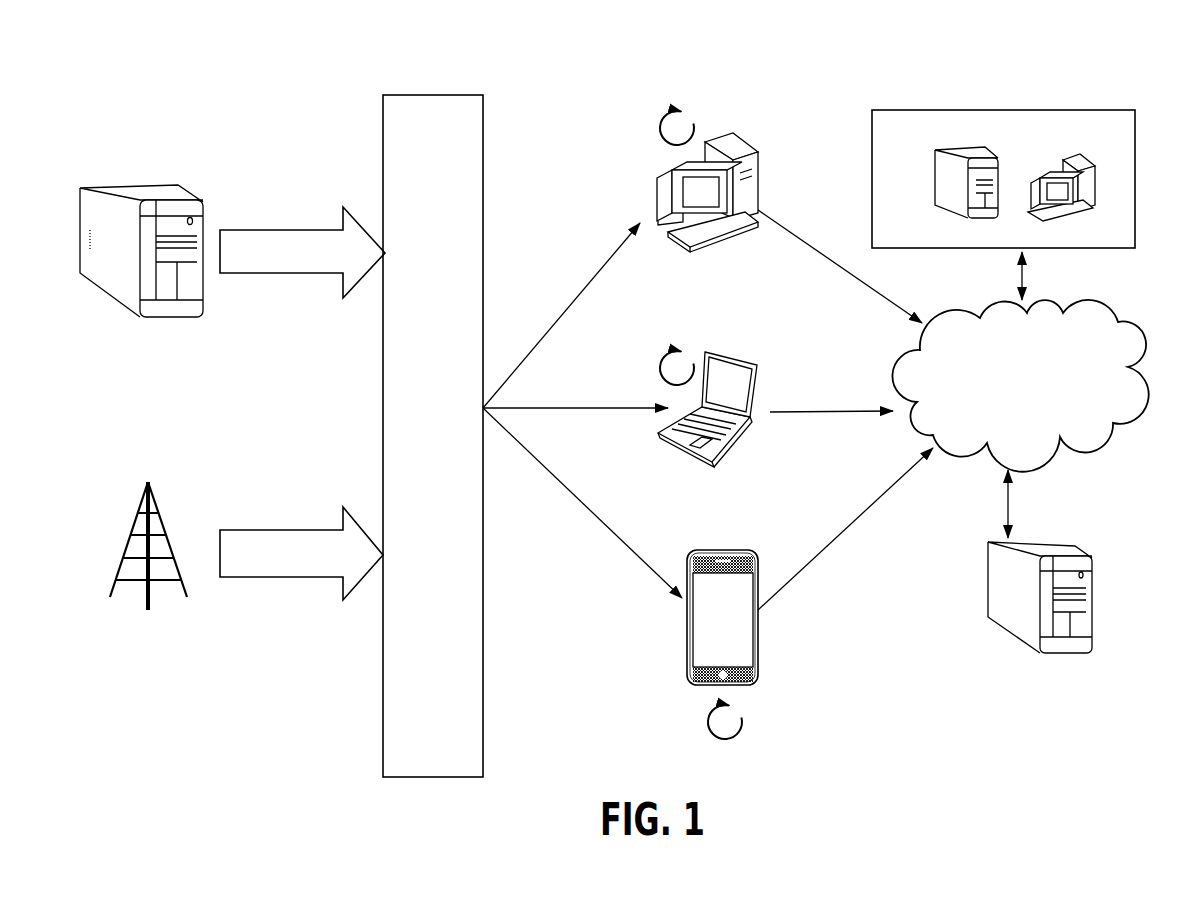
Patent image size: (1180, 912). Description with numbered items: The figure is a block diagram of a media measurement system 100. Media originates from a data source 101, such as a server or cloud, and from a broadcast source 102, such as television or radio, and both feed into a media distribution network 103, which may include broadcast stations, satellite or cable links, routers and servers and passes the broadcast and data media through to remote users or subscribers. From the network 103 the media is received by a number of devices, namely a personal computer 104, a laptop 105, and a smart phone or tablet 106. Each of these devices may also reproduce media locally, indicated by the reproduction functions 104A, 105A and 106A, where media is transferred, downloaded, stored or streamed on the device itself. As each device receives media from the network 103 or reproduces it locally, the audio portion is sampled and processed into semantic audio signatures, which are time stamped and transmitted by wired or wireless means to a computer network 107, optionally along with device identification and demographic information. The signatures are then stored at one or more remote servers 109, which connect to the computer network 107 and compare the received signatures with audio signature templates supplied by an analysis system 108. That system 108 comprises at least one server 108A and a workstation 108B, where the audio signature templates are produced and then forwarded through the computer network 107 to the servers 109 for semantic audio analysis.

The system 100 is at (830, 96).
The data source 101 is at (141, 230).
The broadcast source 102 is at (148, 578).
The media distribution network 103 is at (433, 436).
The personal computer 104 is at (707, 203).
The media reproduction on personal computer 104A is at (646, 128).
The laptop 105 is at (720, 395).
The media reproduction on laptop 105A is at (646, 369).
The smart phone or tablet 106 is at (722, 604).
The media reproduction on smart phone or tablet 106A is at (695, 722).
The computer network 107 is at (1020, 386).
The system for semantic audio analysis 108 is at (922, 147).
The server 108A is at (966, 197).
The workstation 108B is at (1075, 201).
The servers 109 is at (1040, 617).